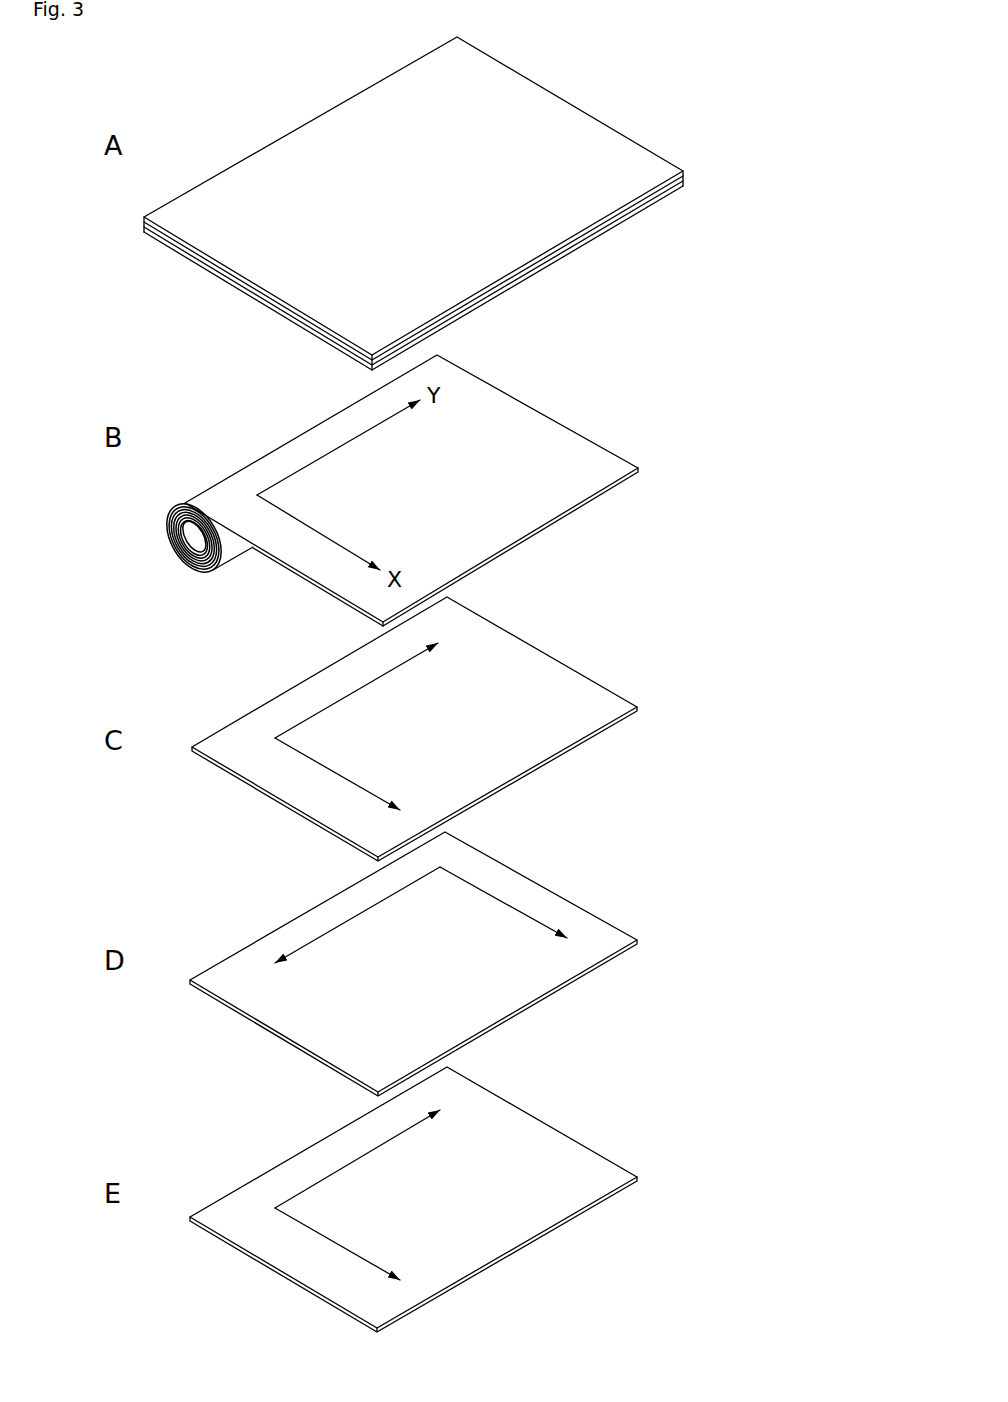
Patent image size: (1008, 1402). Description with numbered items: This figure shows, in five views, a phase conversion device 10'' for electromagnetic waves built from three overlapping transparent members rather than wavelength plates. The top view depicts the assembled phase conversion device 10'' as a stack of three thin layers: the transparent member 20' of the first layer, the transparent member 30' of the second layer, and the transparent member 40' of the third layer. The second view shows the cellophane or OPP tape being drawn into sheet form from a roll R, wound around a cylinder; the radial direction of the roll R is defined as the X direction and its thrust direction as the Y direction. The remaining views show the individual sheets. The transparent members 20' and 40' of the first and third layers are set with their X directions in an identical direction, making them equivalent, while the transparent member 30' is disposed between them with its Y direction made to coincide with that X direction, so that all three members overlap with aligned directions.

The phase conversion device 10'' is at (470, 203).
The transparent member 20' is at (468, 502).
The transparent member 30' is at (467, 632).
The transparent member 40' is at (467, 758).
The roll R is at (170, 516).